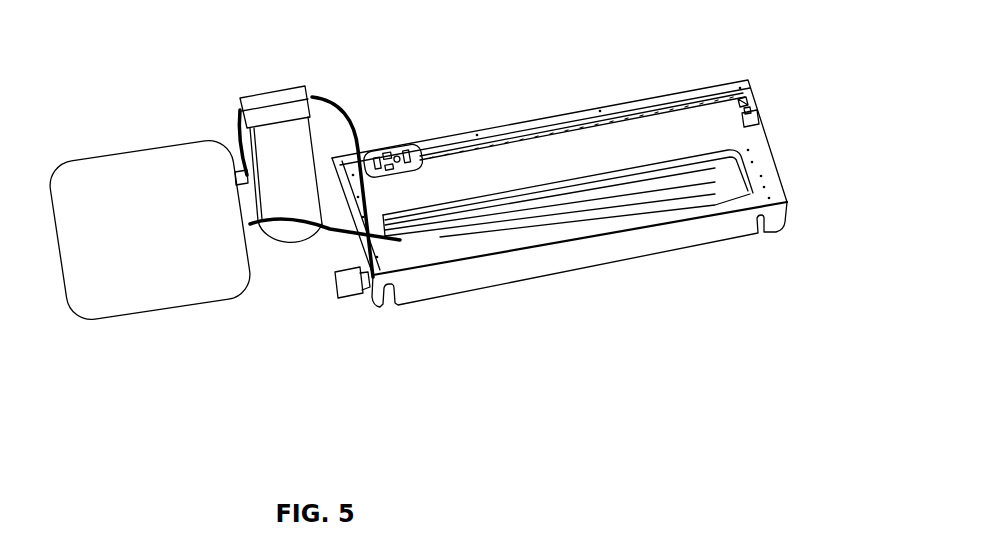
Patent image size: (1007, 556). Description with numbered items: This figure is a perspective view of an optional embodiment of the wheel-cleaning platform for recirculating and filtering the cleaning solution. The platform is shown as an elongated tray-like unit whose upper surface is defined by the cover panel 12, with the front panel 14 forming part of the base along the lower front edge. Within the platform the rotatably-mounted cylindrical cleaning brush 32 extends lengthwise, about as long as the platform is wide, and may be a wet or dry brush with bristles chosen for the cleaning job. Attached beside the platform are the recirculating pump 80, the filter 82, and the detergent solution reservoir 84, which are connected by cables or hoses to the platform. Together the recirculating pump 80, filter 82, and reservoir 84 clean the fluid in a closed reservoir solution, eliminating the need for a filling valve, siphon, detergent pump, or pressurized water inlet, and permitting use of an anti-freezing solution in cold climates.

The cover panel 12 is at (541, 152).
The front panel 14 is at (688, 238).
The cylindrical cleaning brush 32 is at (722, 184).
The recirculating pump 80 is at (348, 289).
The filter 82 is at (272, 98).
The detergent solution reservoir 84 is at (107, 303).